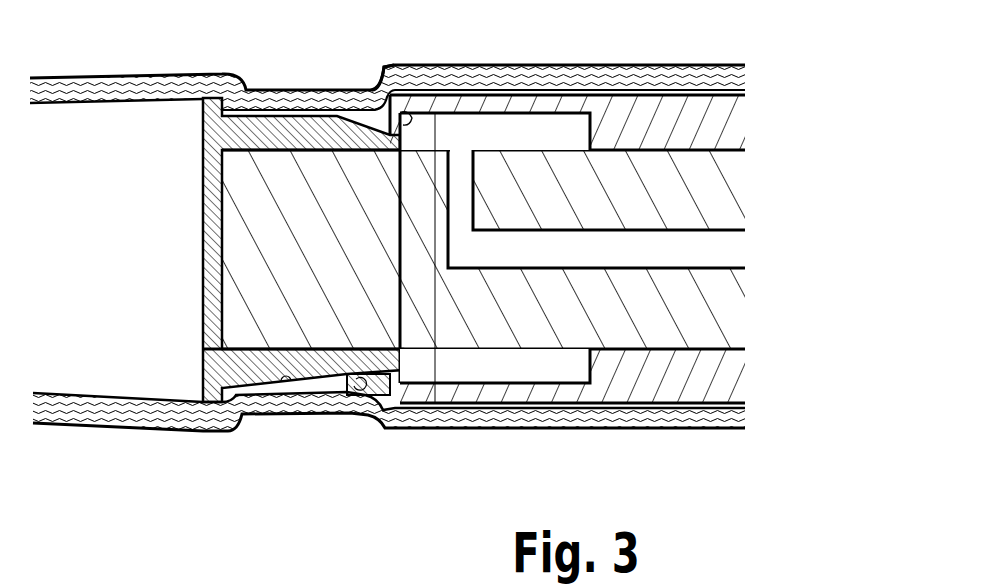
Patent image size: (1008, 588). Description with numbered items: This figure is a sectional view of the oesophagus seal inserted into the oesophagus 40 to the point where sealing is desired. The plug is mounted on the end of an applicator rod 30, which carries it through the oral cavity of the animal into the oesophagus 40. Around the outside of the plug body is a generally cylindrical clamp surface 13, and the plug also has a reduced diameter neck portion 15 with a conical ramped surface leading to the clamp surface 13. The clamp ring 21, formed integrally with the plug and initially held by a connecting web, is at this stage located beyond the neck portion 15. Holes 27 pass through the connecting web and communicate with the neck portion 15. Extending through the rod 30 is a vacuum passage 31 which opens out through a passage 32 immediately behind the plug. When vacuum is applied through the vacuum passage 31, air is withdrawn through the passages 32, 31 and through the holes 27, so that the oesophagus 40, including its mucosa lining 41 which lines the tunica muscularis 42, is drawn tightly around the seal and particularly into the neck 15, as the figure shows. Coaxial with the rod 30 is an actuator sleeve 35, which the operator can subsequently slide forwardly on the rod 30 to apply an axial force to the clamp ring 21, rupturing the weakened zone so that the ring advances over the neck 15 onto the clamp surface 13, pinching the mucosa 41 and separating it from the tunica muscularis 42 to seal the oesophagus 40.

The clamp surface 13 is at (293, 374).
The neck portion 15 is at (349, 398).
The clamp ring 21 is at (407, 110).
The holes 27 is at (392, 96).
The applicator rod 30 is at (625, 307).
The vacuum passage 31 is at (693, 245).
The passage 32 is at (463, 197).
The actuator sleeve 35 is at (710, 127).
The oesophagus 40 is at (158, 59).
The mucosa lining 41 is at (103, 101).
The tunica muscularis 42 is at (88, 80).